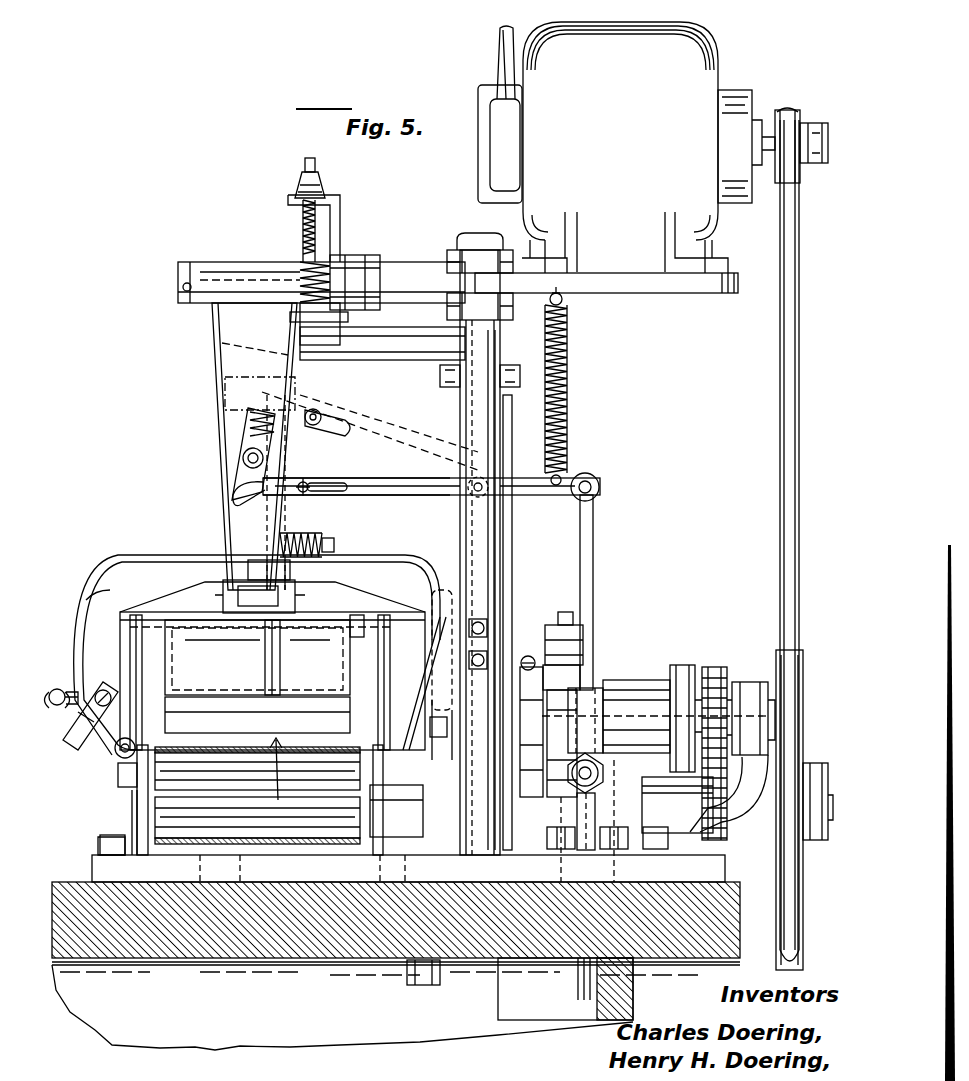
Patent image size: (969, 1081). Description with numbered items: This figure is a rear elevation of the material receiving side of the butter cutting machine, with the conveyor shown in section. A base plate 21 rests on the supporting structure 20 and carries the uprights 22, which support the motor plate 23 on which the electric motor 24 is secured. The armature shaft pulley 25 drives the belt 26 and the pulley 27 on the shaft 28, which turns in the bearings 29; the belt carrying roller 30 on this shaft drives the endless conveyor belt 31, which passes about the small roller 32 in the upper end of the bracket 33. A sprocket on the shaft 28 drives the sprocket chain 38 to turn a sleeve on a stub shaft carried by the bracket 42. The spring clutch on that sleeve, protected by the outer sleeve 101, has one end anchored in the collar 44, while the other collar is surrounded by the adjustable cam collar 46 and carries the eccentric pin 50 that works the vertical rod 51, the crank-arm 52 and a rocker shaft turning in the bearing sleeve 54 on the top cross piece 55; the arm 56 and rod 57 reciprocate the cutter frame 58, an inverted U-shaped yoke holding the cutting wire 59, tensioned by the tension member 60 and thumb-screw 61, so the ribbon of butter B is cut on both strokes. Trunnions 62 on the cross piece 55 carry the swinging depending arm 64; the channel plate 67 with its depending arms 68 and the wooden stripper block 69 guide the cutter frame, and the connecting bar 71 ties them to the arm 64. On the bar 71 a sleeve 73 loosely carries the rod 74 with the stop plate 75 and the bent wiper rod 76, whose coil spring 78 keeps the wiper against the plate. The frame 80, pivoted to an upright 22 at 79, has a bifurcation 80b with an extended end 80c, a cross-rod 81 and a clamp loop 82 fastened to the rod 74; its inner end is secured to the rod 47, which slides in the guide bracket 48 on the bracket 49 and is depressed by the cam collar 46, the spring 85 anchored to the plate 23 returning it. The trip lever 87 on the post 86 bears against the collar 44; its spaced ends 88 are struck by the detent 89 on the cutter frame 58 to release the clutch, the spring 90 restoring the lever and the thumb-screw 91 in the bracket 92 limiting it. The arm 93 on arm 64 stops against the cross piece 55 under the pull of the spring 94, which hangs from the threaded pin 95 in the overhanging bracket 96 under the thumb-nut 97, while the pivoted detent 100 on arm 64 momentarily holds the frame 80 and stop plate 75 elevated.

The base 20 is at (84, 884).
The base plate 21 is at (95, 860).
The uprights 22 is at (463, 240).
The motor carrying bracket or plate 23 is at (664, 293).
The electric motor 24 is at (672, 40).
The pulley 25 is at (797, 113).
The belt 26 is at (779, 428).
The pulley 27 is at (801, 652).
The shaft 28 is at (547, 840).
The bearings 29 is at (398, 795).
The belt carrying roller 30 is at (132, 825).
The endless conveyor or belt 31 is at (240, 843).
The small roller 32 is at (218, 798).
The bracket 33 is at (137, 790).
The sprocket chain 38 is at (716, 668).
The bracket 42 is at (748, 815).
The collar 44 is at (684, 666).
The adjustable cam collar 46 is at (560, 693).
The vertically disposed rod 47 is at (593, 588).
The guide bracket 48 is at (600, 702).
The bracket 49 is at (585, 845).
The eccentrically mounted pin 50 is at (534, 742).
The vertical rod 51 is at (497, 602).
The crank-arm 52 is at (460, 396).
The bearing sleeve 54 is at (402, 360).
The top cross piece 55 is at (355, 262).
The arm 56 is at (220, 343).
The rod 57 is at (313, 426).
The cutter frame 58 is at (112, 563).
The cutting element or wire 59 is at (115, 758).
The tension providing member 60 is at (88, 742).
The thumb-screw 61 is at (57, 689).
The trunnions 62 is at (178, 290).
The depending arm 64 is at (216, 370).
The channeled top plate portion 67 is at (185, 600).
The depending arms 68 is at (130, 652).
The stripper block 69 is at (357, 616).
The connecting and guide bar 71 is at (252, 580).
The vertically disposed sleeve portion 73 is at (288, 568).
The vertically disposed rod 74 is at (280, 660).
The stop plate 75 is at (185, 662).
The bent rod 76 is at (334, 545).
The coil spring 78 is at (316, 535).
The pivot 79 is at (478, 477).
The vertically oscillating frame 80 is at (548, 496).
The bifurcation 80b is at (414, 496).
The extended end 80c is at (240, 503).
The cross-rod 81 is at (308, 485).
The clamp member or loop 82 is at (345, 485).
The spring 85 is at (568, 412).
The vertically disposed post 86 is at (566, 612).
The clutch release or trip lever 87 is at (575, 647).
The vertically spaced portions 88 is at (445, 590).
The spring strip or detent 89 is at (438, 738).
The spring 90 is at (528, 671).
The adjustable thumb-screw 91 is at (440, 660).
The bracket 92 is at (488, 629).
The arm 93 is at (322, 345).
The spring 94 is at (312, 260).
The threaded pin 95 is at (303, 224).
The overhanging bracket 96 is at (340, 204).
The thumb-nut 97 is at (320, 186).
The stop detent 100 is at (240, 463).
The outer sleeve or shell 101 is at (652, 680).
The ribbon of plastic material or butter B is at (280, 779).